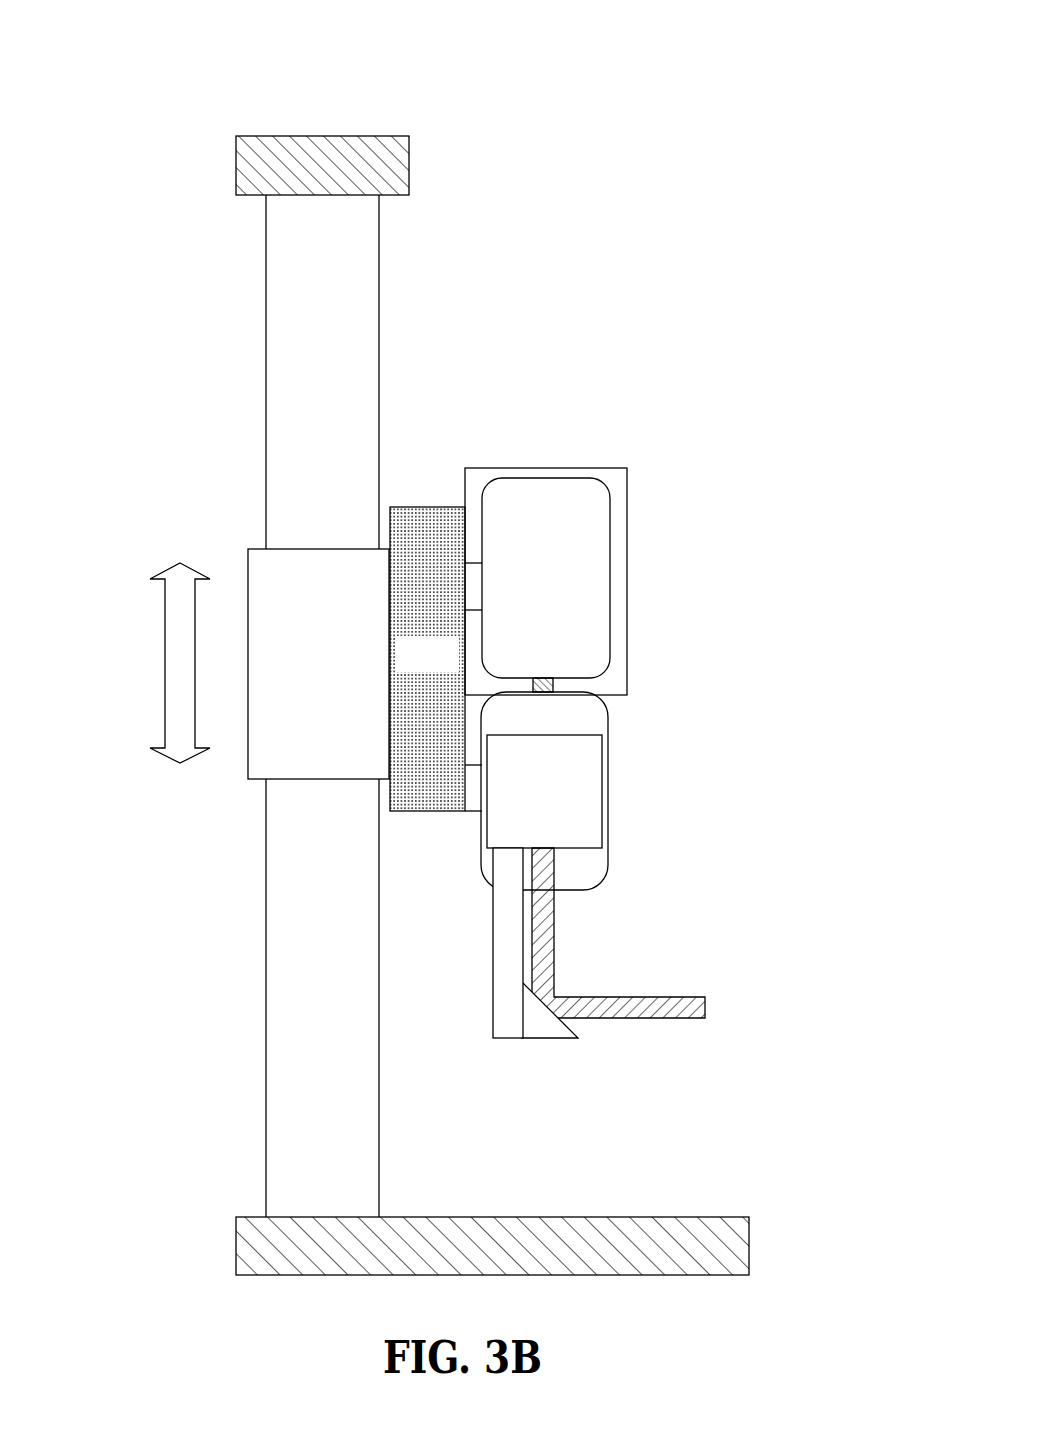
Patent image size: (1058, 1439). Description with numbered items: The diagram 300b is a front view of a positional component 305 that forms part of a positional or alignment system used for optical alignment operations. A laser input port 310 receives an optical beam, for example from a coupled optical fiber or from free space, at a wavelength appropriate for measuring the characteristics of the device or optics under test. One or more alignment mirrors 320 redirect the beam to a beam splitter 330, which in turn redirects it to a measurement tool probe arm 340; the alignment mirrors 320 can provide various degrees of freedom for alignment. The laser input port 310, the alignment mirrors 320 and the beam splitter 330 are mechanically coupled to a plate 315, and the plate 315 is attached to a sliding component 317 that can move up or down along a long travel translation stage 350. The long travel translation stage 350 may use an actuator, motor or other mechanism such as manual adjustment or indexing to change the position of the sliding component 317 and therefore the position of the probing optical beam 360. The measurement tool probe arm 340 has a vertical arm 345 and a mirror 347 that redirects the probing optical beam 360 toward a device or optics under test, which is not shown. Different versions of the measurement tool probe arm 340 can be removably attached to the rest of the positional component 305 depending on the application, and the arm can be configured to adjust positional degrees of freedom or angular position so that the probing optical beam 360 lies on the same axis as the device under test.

The diagram 300b is at (654, 44).
The positional component 305 is at (694, 268).
The laser input port 310 is at (550, 468).
The plate 315 is at (450, 663).
The sliding component 317 is at (346, 678).
The alignment mirrors 320 is at (569, 591).
The beam splitter 330 is at (616, 778).
The measurement tool probe arm 340 is at (567, 802).
The vertical arm 345 is at (481, 989).
The mirror 347 is at (554, 1048).
The long travel translation stage 350 is at (294, 393).
The probing optical beam 360 is at (683, 996).